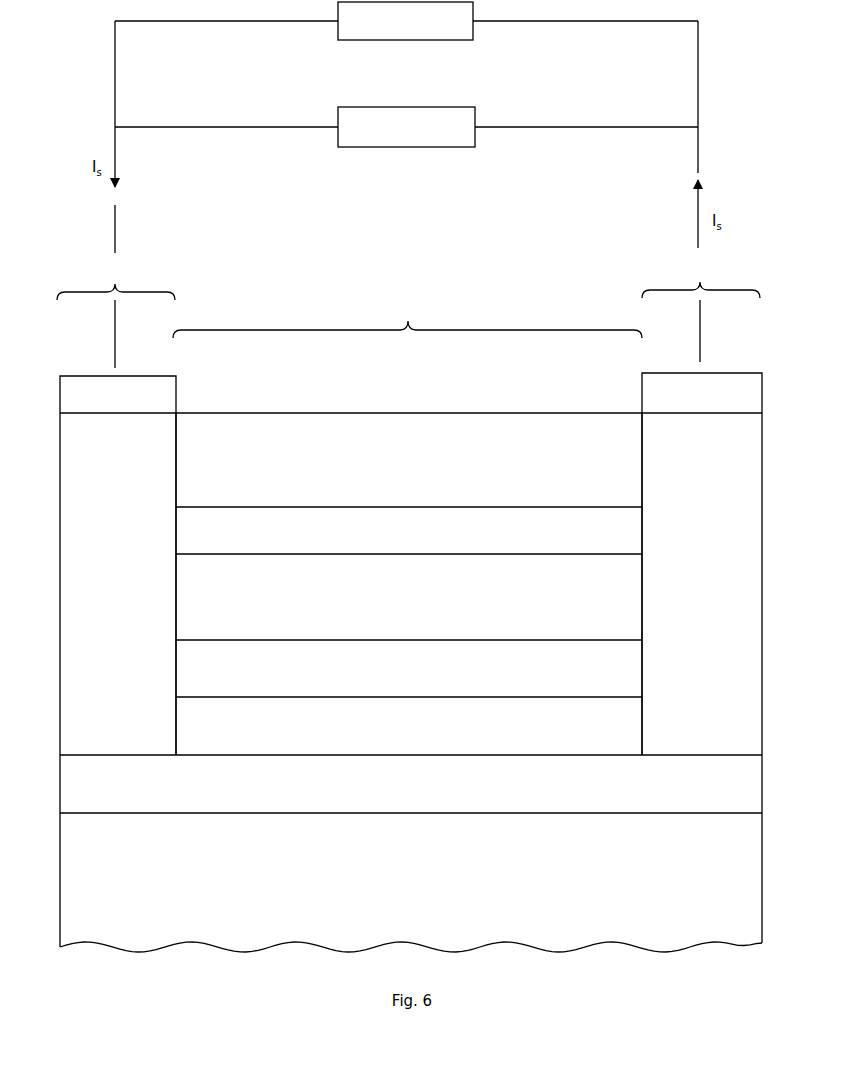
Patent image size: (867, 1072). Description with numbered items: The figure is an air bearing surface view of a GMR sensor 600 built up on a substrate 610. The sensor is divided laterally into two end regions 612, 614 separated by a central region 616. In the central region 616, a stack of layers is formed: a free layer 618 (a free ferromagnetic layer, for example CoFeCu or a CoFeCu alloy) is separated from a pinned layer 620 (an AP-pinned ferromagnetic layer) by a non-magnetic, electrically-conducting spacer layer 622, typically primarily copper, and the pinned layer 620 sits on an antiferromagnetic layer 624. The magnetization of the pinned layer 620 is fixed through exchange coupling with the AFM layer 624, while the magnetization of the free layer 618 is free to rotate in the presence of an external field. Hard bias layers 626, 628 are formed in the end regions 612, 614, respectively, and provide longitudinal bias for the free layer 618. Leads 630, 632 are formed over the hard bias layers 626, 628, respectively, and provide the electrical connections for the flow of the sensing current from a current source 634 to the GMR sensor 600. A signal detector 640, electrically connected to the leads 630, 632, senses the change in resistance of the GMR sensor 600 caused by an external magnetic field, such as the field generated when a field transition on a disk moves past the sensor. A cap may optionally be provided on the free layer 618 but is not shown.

The GMR sensor 600 is at (420, 649).
The substrate 610 is at (742, 867).
The end region 612 is at (116, 315).
The end region 614 is at (701, 310).
The central region 616 is at (407, 313).
The free layer 618 is at (623, 478).
The pinned layer 620 is at (613, 592).
The spacer layer 622 is at (633, 533).
The antiferromagnetic (AFM) layer 624 is at (625, 668).
The hard bias layer 626 is at (98, 558).
The hard bias layer 628 is at (740, 523).
The lead 630 is at (69, 397).
The lead 632 is at (750, 390).
The current source 634 is at (415, 147).
The signal detector 640 is at (397, 40).